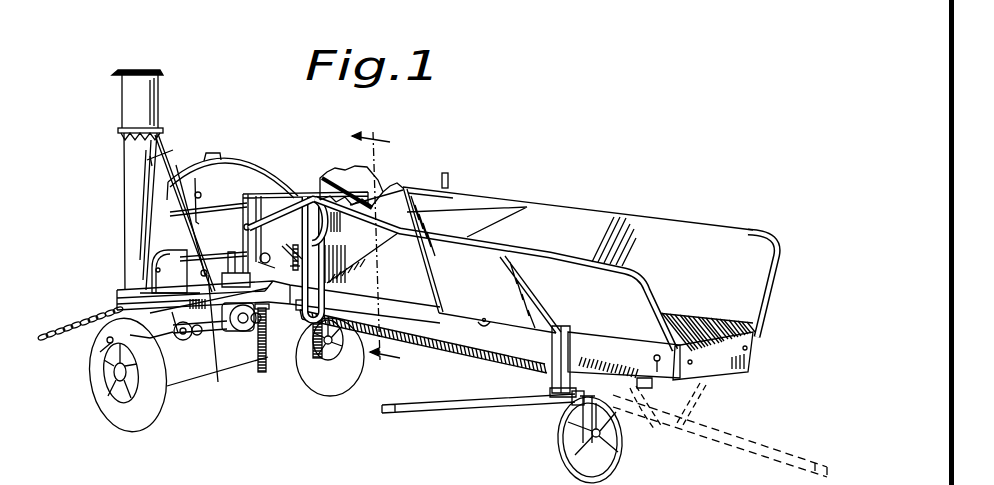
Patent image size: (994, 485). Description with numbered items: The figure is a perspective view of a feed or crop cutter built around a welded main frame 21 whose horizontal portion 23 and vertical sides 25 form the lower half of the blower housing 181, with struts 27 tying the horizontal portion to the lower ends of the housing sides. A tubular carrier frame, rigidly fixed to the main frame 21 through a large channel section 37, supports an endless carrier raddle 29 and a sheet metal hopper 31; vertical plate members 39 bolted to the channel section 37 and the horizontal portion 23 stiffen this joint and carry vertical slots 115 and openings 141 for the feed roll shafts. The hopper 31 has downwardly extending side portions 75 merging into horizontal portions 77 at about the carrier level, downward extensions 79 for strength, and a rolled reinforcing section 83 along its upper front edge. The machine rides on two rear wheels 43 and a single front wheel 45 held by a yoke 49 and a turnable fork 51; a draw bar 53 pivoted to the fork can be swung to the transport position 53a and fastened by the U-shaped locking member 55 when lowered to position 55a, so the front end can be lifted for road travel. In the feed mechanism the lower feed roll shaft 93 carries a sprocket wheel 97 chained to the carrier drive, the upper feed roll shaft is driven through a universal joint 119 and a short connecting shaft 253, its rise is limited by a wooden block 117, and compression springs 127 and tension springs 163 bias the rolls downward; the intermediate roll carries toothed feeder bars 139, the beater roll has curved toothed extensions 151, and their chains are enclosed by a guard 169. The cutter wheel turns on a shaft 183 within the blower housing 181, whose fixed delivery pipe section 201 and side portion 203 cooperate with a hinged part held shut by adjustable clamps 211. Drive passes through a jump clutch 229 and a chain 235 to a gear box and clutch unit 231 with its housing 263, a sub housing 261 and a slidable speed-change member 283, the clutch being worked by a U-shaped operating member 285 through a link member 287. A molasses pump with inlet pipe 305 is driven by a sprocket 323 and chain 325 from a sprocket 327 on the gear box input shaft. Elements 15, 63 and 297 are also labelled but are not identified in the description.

The side panel 15 is at (497, 295).
The main frame 21 is at (118, 289).
The horizontal portion 23 is at (213, 345).
The sides of the blower housing 25 is at (190, 365).
The struts 27 is at (167, 388).
The carrier raddle 29 is at (468, 346).
The hopper 31 is at (595, 222).
The channel section 37 is at (333, 303).
The plate members 39 is at (273, 207).
The rear wheels 43 is at (115, 418).
The front wheel 45 is at (562, 427).
The yoke 49 is at (558, 387).
The fork 51 is at (580, 428).
The draw bar 53 is at (442, 406).
The draw bar transport position 53a is at (762, 445).
The draw bar locking member 55 is at (646, 415).
The locking member lowered position 55a is at (705, 400).
The bracket 63 is at (652, 385).
The side portions 75 is at (693, 240).
The horizontal portions 77 is at (737, 323).
The downward extensions 79 is at (598, 347).
The rolled reinforcing section 83 is at (567, 198).
The shaft 93 is at (448, 482).
The sprocket wheel 97 is at (290, 255).
The vertical slots 115 is at (322, 484).
The block of wood 117 is at (248, 205).
The universal joint 119 is at (213, 245).
The compression spring 127 is at (267, 349).
The toothed feeder bars 139 is at (321, 180).
The openings 141 is at (340, 482).
The toothed extensions 151 is at (388, 187).
The tension springs 163 is at (298, 259).
The guard 169 is at (245, 227).
The blower housing 181 is at (253, 167).
The shaft 183 is at (240, 260).
The delivery pipe section 201 is at (128, 165).
The side portion 203 is at (207, 222).
The adjustable clamps 211 is at (197, 177).
The jump clutch 229 is at (250, 331).
The gear box and clutch 231 is at (174, 303).
The chain 235 is at (269, 253).
The connecting shaft 253 is at (207, 247).
The sub housing 261 is at (163, 261).
The housing 263 is at (120, 294).
The operating member 283 is at (107, 338).
The operating member 285 is at (450, 181).
The link member 287 is at (299, 305).
The chain 297 is at (83, 318).
The inlet pipe 305 is at (100, 350).
The sprocket 323 is at (202, 333).
The chain 325 is at (225, 332).
The sprocket 327 is at (266, 329).